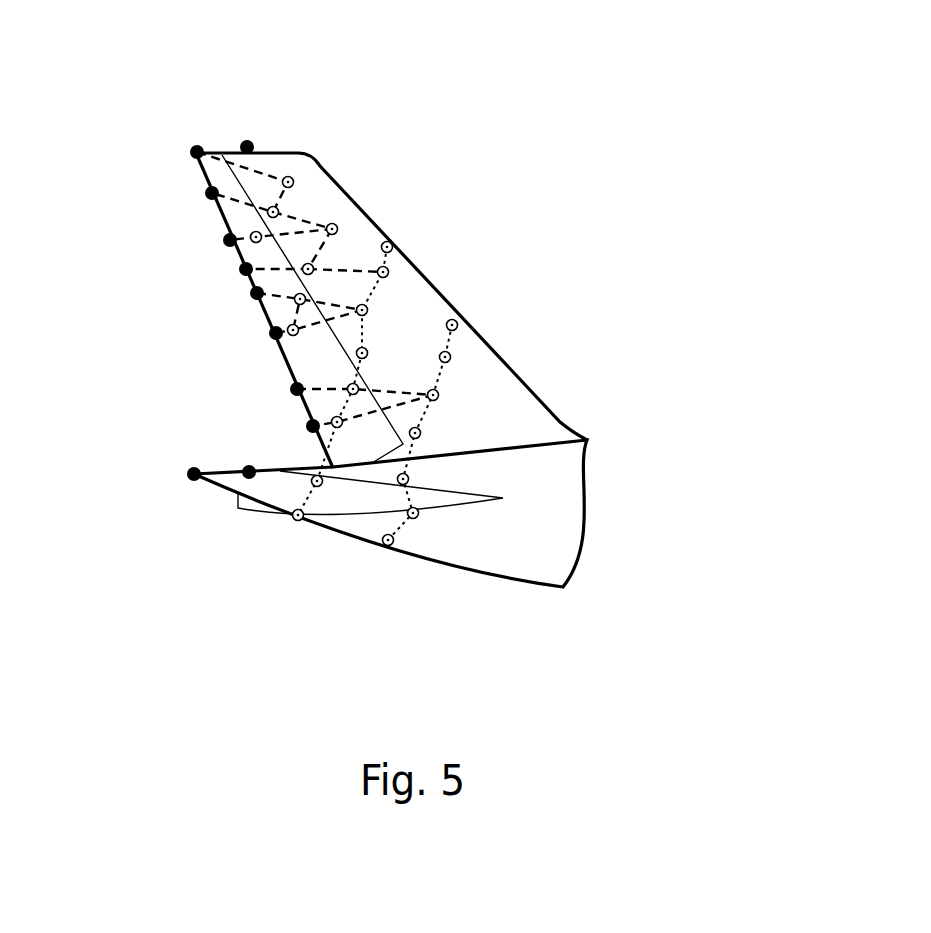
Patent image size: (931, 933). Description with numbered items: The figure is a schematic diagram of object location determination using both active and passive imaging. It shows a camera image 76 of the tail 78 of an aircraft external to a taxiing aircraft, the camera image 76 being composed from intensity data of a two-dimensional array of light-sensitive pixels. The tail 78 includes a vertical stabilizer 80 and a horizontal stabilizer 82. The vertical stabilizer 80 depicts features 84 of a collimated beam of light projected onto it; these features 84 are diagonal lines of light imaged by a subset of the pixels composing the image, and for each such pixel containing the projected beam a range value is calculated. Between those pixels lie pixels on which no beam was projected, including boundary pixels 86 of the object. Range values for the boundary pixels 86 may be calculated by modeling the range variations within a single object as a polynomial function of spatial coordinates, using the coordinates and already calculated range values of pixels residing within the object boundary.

The camera image 76 is at (135, 117).
The tail 78 is at (528, 363).
The vertical stabilizer 80 is at (417, 308).
The horizontal stabilizer 82 is at (282, 490).
The features 84 is at (343, 375).
The boundary pixels 86 is at (231, 270).